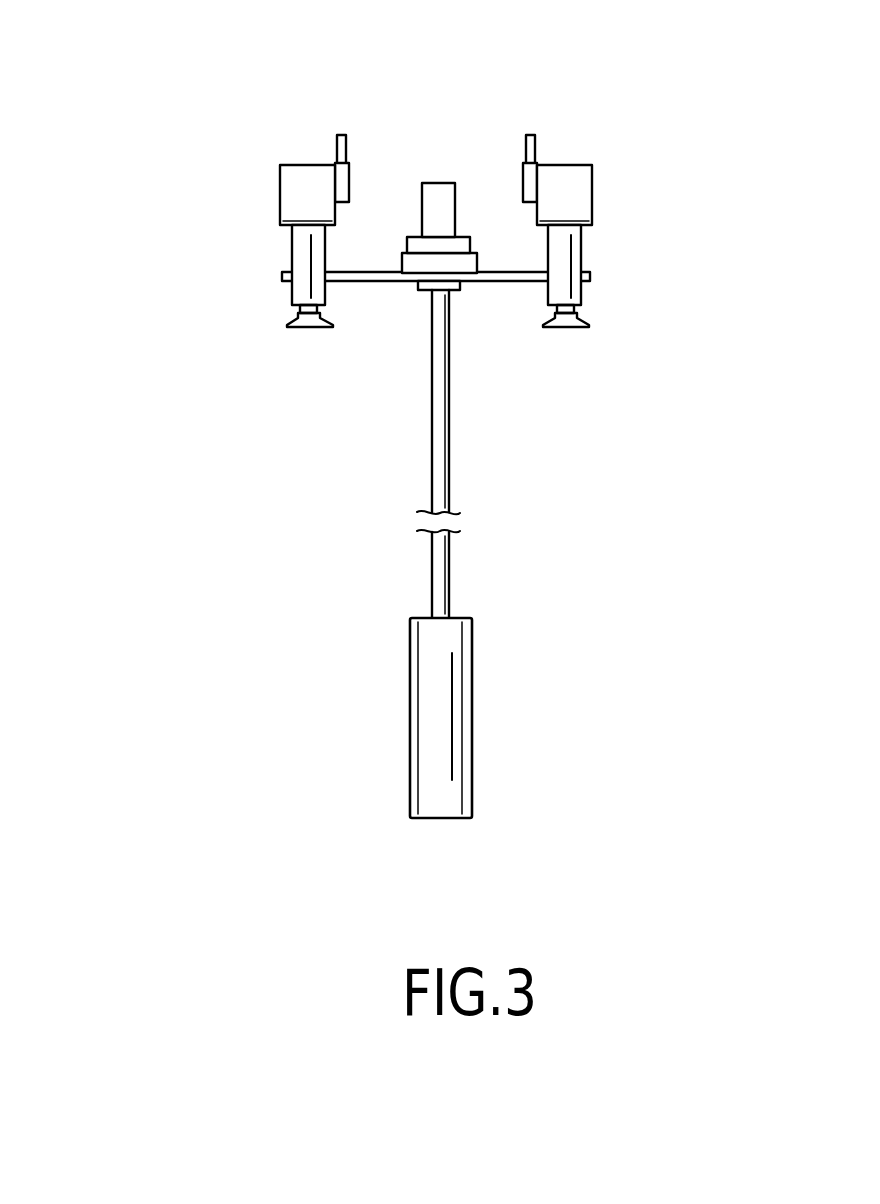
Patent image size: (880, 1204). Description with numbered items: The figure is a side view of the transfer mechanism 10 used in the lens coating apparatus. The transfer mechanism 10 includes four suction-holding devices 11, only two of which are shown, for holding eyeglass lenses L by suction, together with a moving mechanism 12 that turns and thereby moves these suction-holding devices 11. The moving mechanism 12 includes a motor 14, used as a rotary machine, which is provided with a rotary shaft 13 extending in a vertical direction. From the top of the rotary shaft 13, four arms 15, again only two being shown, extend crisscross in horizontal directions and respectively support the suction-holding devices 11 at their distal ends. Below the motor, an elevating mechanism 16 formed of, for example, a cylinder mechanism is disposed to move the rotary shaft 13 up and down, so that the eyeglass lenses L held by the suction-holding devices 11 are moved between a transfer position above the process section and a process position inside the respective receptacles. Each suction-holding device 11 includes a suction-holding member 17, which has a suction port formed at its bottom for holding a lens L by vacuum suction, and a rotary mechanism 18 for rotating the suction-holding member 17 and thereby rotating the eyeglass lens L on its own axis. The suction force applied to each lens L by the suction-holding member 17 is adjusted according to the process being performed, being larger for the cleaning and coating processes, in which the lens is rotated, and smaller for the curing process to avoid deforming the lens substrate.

The transfer mechanism 10 is at (670, 103).
The suction-holding device 11 is at (163, 284).
The moving mechanism 12 is at (563, 141).
The rotary shaft 13 is at (450, 413).
The motor 14 is at (442, 206).
The arm 15 is at (373, 283).
The elevating mechanism 16 is at (472, 698).
The suction-holding member 17 is at (300, 248).
The rotary mechanism 18 is at (298, 191).
The eyeglass lens L is at (293, 317).